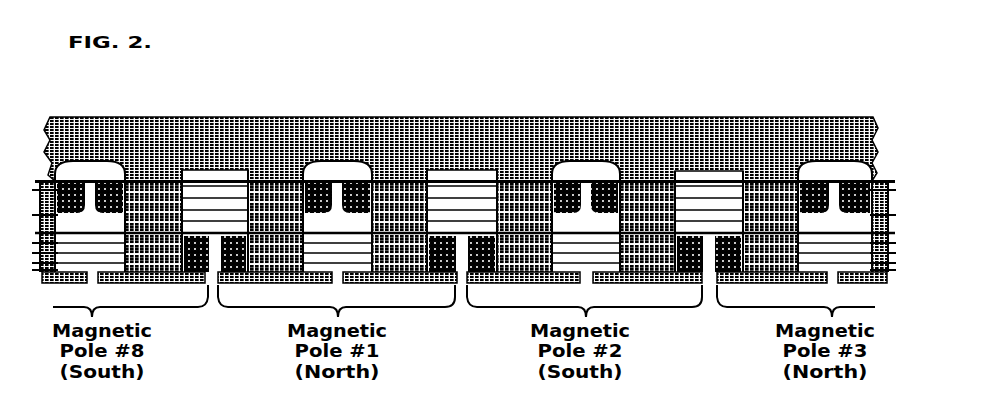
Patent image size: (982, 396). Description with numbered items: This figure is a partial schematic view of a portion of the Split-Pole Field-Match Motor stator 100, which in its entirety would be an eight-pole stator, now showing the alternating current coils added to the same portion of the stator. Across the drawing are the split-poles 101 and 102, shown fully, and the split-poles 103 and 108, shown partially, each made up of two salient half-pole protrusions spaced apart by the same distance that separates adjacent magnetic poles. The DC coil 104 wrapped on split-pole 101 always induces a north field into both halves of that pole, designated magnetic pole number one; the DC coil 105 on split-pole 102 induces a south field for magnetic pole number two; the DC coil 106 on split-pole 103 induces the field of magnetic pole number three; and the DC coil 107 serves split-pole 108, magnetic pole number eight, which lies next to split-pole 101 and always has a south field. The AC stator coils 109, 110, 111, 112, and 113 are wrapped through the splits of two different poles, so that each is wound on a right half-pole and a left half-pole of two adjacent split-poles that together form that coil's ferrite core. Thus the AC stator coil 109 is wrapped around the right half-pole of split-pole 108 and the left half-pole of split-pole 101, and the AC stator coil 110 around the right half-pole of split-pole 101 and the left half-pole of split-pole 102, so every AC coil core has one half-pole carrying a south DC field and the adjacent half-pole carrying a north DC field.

The stator 100 is at (173, 128).
The split-pole 101 is at (390, 170).
The split-pole 102 is at (637, 170).
The split-pole 103 is at (880, 167).
The DC coil 104 is at (333, 253).
The DC coil 105 is at (580, 253).
The DC coil 106 is at (832, 253).
The DC coil 107 is at (92, 250).
The split-pole 108 is at (147, 170).
The AC stator coil 109 is at (208, 195).
The AC stator coil 110 is at (448, 190).
The AC stator coil 111 is at (715, 193).
The AC stator coil 112 is at (888, 181).
The AC stator coil 113 is at (39, 181).